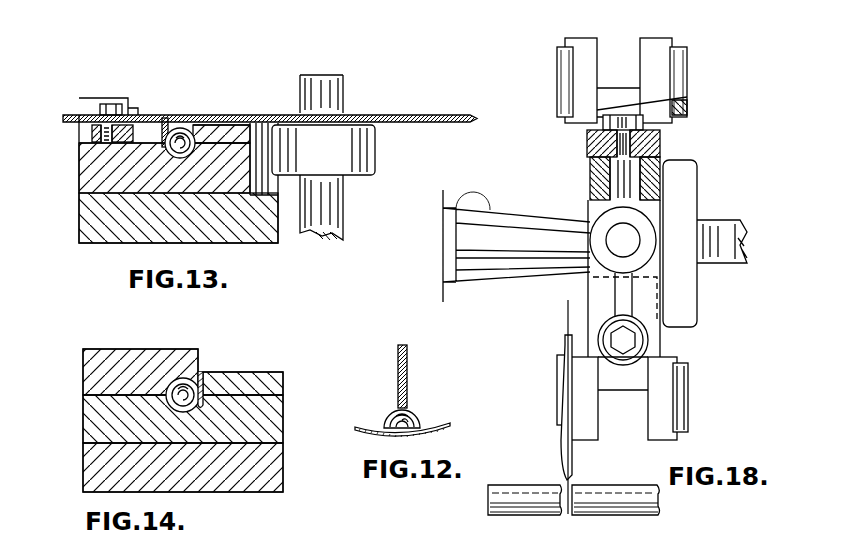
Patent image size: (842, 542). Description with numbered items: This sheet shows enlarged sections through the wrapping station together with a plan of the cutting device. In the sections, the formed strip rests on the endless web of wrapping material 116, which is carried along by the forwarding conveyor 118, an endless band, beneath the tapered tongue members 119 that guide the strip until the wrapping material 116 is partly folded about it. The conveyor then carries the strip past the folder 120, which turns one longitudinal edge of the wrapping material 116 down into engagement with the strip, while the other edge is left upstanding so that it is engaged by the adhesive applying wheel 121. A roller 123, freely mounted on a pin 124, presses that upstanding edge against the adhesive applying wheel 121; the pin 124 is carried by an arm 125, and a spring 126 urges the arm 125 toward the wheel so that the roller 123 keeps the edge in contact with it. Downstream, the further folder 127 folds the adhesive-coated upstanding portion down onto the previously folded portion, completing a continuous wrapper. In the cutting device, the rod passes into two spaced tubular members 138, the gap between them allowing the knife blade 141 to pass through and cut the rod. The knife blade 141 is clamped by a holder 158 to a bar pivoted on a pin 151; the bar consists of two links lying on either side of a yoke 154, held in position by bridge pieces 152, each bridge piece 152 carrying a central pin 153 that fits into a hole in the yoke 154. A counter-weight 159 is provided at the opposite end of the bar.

In FIG. 13, the endless web of wrapping material 116 is at (171, 118).
In FIG. 14, the endless web of wrapping material 116 is at (203, 376).
In FIG. 12, the endless web of wrapping material 116 is at (384, 422).
In FIG. 13, the forwarding conveyor 118 is at (182, 140).
In FIG. 14, the forwarding conveyor 118 is at (172, 389).
In FIG. 12, the forwarding conveyor 118 is at (380, 429).
In FIG. 12, the tongue member 119 is at (414, 411).
In FIG. 13, the folder 120 is at (231, 124).
In FIG. 13, the adhesive applying wheel 121 is at (398, 115).
In FIG. 13, the roller 123 is at (80, 101).
In FIG. 13, the pin 124 is at (107, 104).
In FIG. 13, the arm 125 is at (134, 110).
In FIG. 13, the spring 126 is at (92, 129).
In FIG. 13, the further folder 127 is at (128, 106).
In FIG. 14, the further folder 127 is at (107, 372).
In FIG. 18, the tubular members 138 is at (538, 485).
In FIG. 18, the knife blade 141 is at (571, 481).
In FIG. 18, the pin 151 is at (617, 236).
In FIG. 18, the bridge piece 152 is at (593, 145).
In FIG. 18, the pin 153 is at (615, 178).
In FIG. 18, the yoke 154 is at (683, 183).
In FIG. 18, the holder 158 is at (558, 418).
In FIG. 18, the counter-weight 159 is at (666, 62).